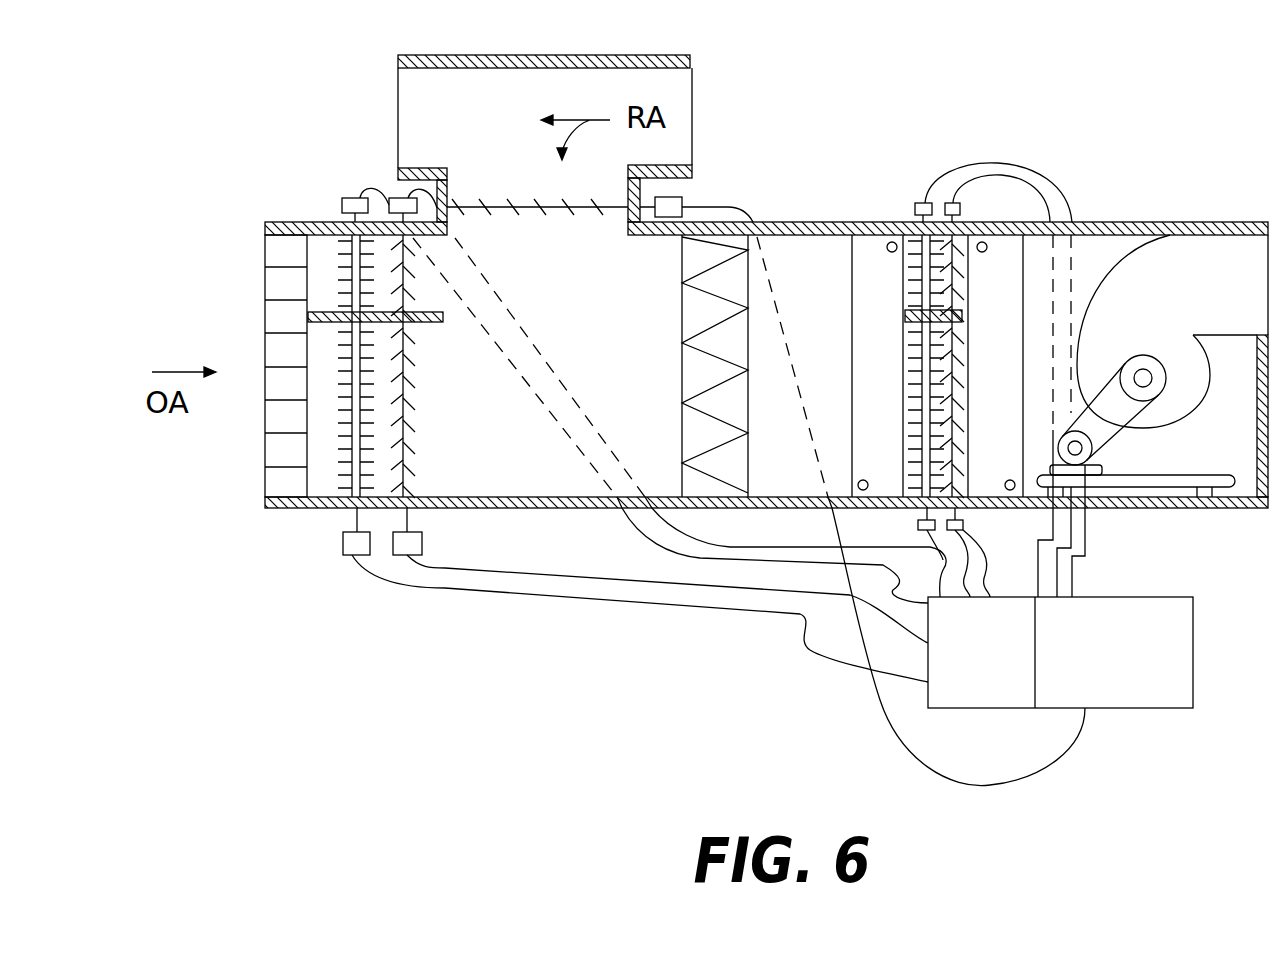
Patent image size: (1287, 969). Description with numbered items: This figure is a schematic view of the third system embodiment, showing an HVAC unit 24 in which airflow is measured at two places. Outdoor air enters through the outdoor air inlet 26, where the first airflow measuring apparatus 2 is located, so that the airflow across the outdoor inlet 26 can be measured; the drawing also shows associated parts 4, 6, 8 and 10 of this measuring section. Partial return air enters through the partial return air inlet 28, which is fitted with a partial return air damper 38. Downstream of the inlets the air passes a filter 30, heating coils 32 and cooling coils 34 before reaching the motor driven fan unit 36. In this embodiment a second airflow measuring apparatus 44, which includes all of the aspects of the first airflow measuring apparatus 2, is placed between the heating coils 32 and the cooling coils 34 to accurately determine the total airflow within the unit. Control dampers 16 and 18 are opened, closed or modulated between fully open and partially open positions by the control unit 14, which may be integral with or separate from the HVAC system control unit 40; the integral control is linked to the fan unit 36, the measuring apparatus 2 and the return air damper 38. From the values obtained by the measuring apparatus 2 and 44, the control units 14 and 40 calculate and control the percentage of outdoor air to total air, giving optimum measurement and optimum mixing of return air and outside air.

The airflow measuring apparatus 2 is at (322, 217).
The high voltage power supply 4 is at (330, 278).
The sensor units 6 is at (328, 428).
The ionizing electrodes 8 is at (327, 323).
The ionizing wires 10 is at (342, 270).
The control unit 14 is at (1000, 685).
The control damper 16 is at (408, 257).
The control damper 18 is at (405, 440).
The HVAC unit 24 is at (762, 140).
The outdoor air inlet 26 is at (258, 310).
The partial return air inlet 28 is at (636, 155).
The filter 30 is at (688, 383).
The heating coils 32 is at (868, 250).
The cooling coils 34 is at (990, 288).
The motor driven fan unit 36 is at (1155, 272).
The partial return air damper 38 is at (497, 205).
The HVAC system control unit 40 is at (1175, 647).
The second airflow measuring apparatus 44 is at (942, 160).